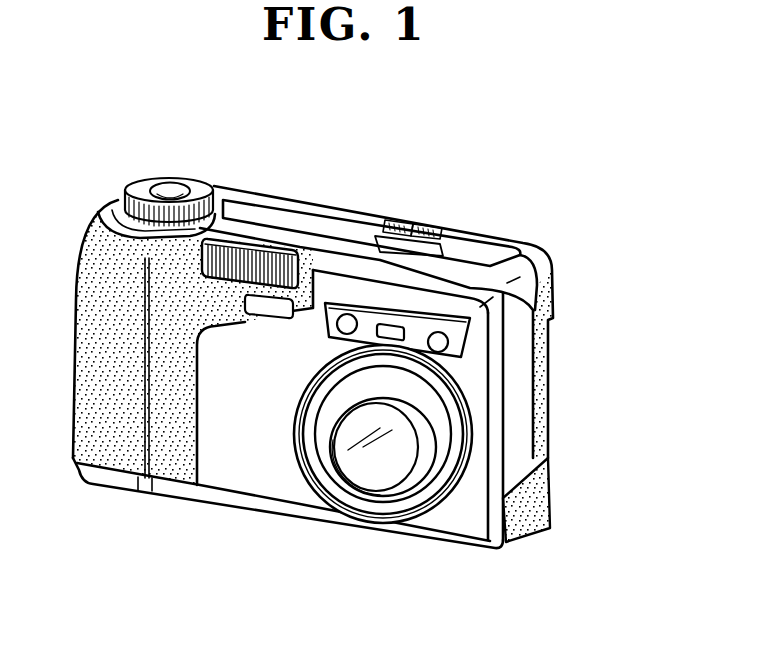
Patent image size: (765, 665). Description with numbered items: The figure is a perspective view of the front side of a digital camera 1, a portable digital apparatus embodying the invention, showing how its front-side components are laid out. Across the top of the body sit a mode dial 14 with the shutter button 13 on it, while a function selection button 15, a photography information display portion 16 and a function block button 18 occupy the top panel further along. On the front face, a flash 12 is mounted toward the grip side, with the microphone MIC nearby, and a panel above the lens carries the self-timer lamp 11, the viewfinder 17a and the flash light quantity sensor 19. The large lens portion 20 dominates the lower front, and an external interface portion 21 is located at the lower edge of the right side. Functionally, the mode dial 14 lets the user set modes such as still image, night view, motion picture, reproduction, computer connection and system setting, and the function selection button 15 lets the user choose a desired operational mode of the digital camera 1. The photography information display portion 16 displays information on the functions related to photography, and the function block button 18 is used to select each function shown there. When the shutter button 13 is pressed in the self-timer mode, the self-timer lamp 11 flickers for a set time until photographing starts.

The digital camera 1 is at (247, 570).
The self-timer lamp 11 is at (347, 321).
The flash 12 is at (248, 257).
The shutter button 13 is at (170, 186).
The mode dial 14 is at (138, 188).
The function selection button 15 is at (403, 219).
The photography information display portion 16 is at (410, 244).
The viewfinder 17a is at (398, 329).
The function block button 18 is at (430, 222).
The flash light quantity sensor 19 is at (450, 341).
The lens portion 20 is at (398, 445).
The external interface portion 21 is at (546, 484).
The microphone MIC is at (280, 312).